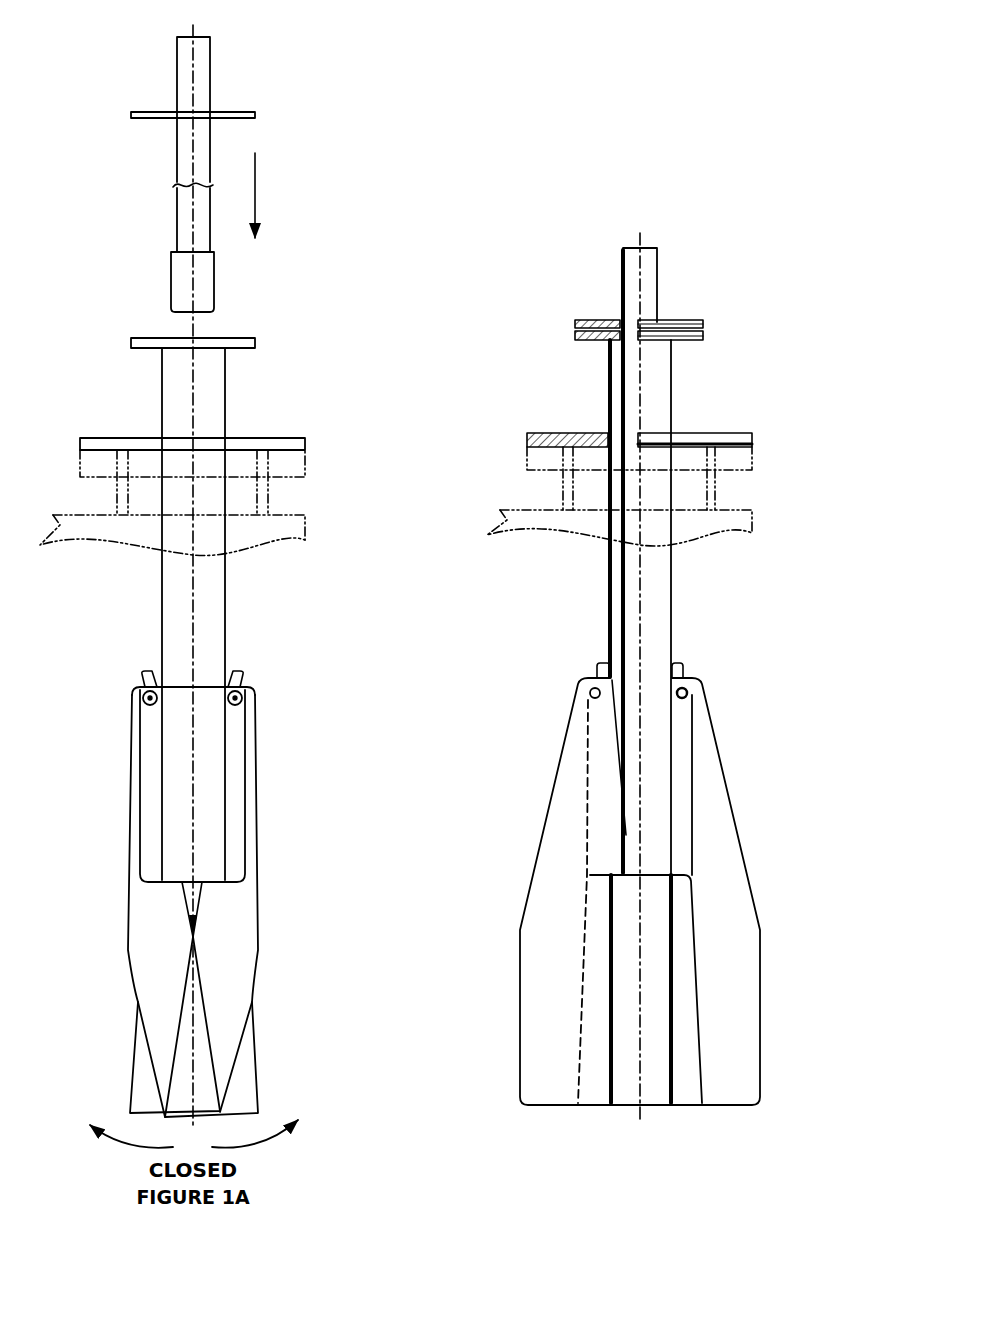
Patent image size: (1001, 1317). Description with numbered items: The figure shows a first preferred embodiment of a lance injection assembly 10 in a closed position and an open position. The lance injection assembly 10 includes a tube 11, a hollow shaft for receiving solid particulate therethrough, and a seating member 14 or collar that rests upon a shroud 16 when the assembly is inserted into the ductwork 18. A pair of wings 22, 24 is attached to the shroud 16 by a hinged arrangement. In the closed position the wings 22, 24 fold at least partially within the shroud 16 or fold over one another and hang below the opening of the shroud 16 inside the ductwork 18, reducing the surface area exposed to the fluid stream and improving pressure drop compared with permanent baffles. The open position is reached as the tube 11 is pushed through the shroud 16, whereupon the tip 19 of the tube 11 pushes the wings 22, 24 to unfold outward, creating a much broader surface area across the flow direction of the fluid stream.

In FIG. 1B, the lance injection assembly 10 is at (653, 704).
In FIG. 1A, the tube 11 is at (173, 75).
In FIG. 1A, the seating member 14 is at (257, 115).
In FIG. 1A, the shroud 16 is at (227, 392).
In FIG. 1B, the shroud 16 is at (605, 608).
In FIG. 1A, the ductwork 18 is at (306, 458).
In FIG. 1A, the tip 19 is at (217, 278).
In FIG. 1A, the wing 22 is at (128, 818).
In FIG. 1B, the wing 22 is at (552, 807).
In FIG. 1A, the wing 24 is at (258, 815).
In FIG. 1B, the wing 24 is at (727, 886).